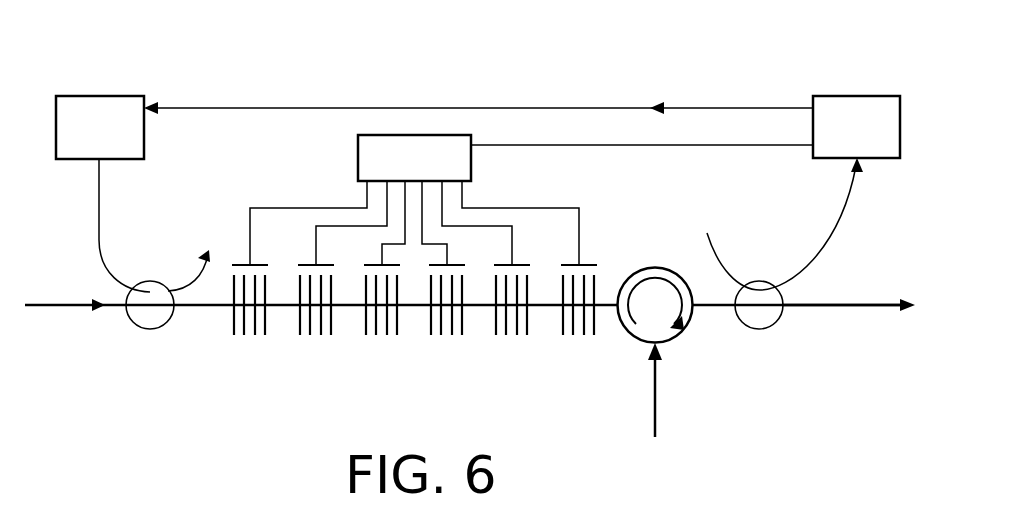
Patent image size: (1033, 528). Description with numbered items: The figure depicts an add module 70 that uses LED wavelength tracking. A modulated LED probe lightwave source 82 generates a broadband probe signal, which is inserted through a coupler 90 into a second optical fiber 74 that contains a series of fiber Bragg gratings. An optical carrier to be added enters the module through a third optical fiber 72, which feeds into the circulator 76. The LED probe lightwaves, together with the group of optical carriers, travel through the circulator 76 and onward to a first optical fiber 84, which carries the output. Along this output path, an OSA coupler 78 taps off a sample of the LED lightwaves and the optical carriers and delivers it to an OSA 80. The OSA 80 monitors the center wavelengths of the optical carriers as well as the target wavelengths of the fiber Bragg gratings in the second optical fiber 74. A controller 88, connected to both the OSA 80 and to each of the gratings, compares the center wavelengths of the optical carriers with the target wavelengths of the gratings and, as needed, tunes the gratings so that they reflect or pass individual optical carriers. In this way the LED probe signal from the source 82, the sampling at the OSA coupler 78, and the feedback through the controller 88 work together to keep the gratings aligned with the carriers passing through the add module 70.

The add module 70 is at (818, 463).
The third optical fiber 72 is at (653, 380).
The second optical fiber 74 is at (482, 308).
The circulator 76 is at (663, 268).
The OSA coupler 78 is at (755, 330).
The OSA 80 is at (864, 96).
The modulated LED probe lightwave source 82 is at (107, 96).
The first optical fiber 84 is at (848, 307).
The controller 88 is at (531, 200).
The coupler 90 is at (143, 330).